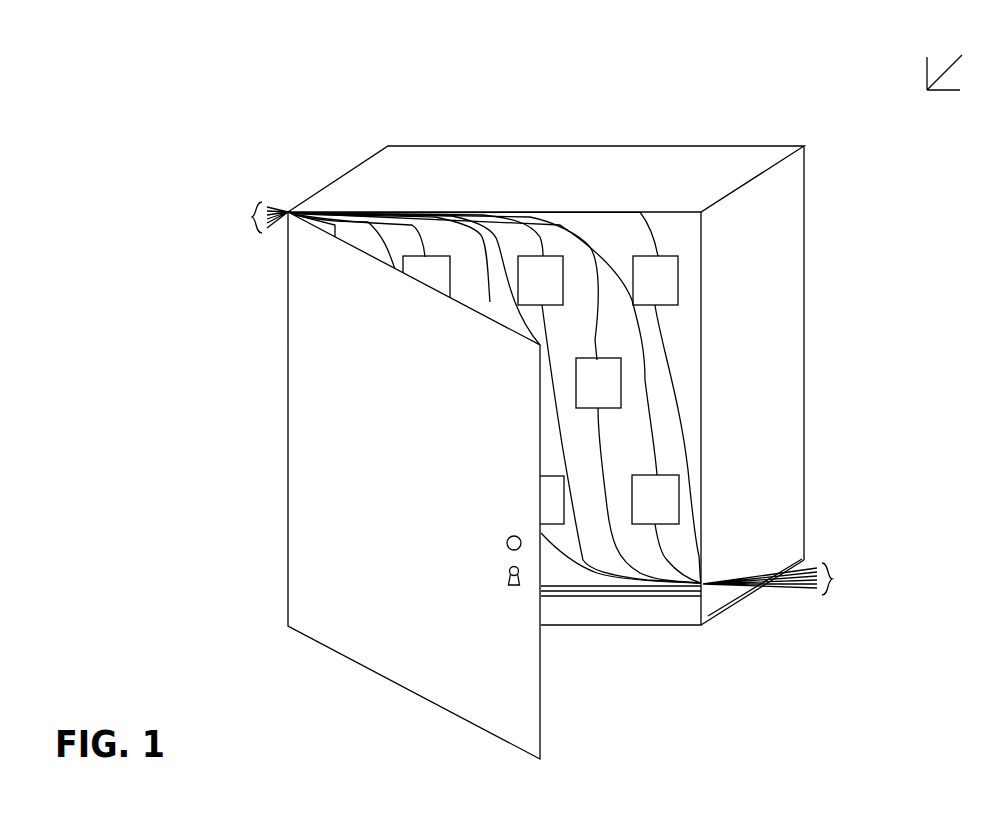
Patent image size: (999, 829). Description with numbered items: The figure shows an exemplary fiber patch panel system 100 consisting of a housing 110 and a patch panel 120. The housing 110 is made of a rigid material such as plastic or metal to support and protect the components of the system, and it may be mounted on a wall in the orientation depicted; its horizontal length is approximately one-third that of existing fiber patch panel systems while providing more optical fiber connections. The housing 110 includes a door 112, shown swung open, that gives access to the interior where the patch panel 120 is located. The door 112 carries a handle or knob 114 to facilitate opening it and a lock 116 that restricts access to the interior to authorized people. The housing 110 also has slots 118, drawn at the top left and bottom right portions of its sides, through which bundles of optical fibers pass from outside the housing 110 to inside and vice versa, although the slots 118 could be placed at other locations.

The fiber patch panel system 100 is at (152, 63).
The housing 110 is at (571, 147).
The door 112 is at (387, 678).
The handle or knob 114 is at (507, 543).
The lock 116 is at (509, 572).
The slots 118 is at (340, 178).
The patch panel 120 is at (681, 241).